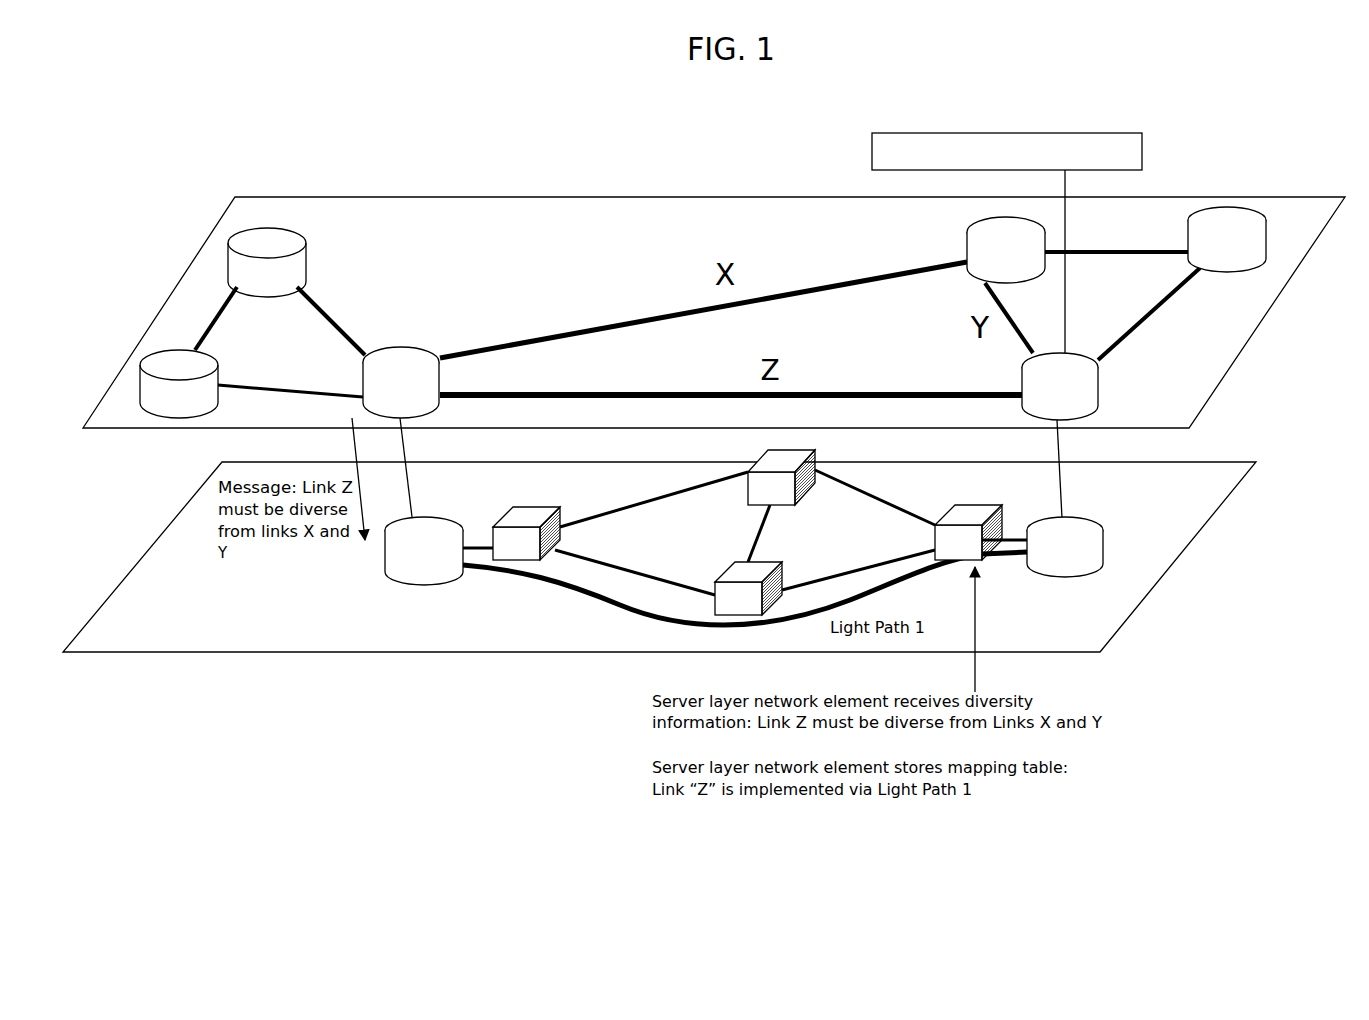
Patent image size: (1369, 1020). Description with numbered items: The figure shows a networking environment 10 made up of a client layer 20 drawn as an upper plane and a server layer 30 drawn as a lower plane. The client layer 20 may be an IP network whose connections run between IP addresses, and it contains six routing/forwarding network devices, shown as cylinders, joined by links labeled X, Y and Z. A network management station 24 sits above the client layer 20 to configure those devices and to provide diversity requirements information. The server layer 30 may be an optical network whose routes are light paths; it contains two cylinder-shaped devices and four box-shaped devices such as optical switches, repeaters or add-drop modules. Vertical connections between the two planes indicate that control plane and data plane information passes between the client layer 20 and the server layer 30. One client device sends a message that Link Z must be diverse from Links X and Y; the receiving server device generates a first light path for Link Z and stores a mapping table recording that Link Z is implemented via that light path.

The networking environment 10 is at (563, 167).
The client layer 20 is at (375, 197).
The network management station 24 is at (1007, 131).
The server layer 30 is at (222, 652).